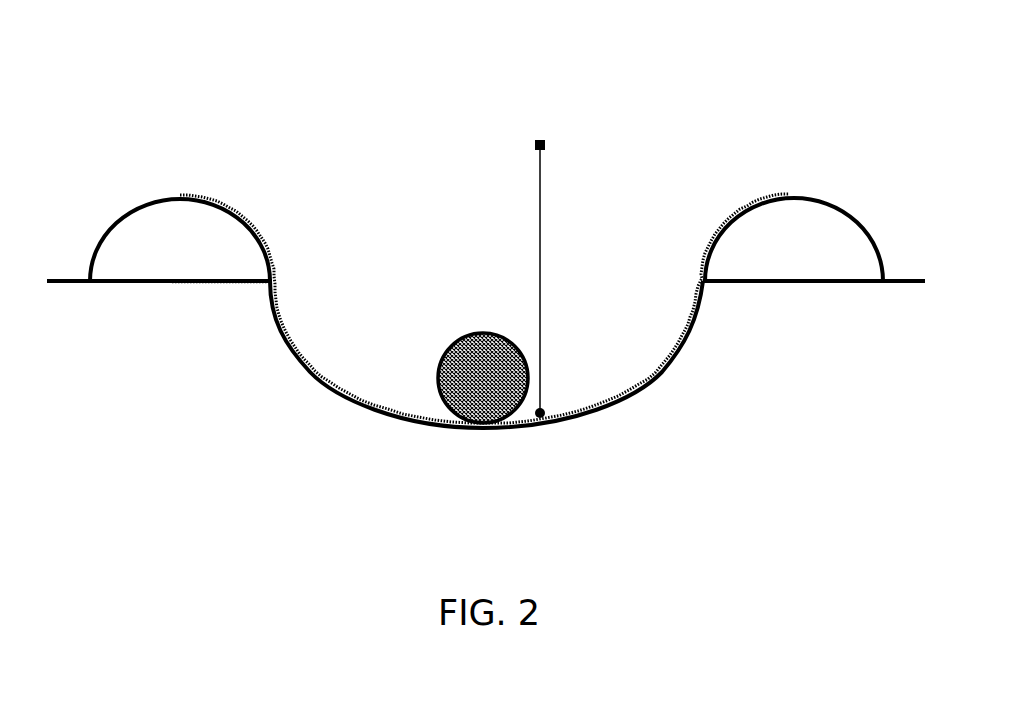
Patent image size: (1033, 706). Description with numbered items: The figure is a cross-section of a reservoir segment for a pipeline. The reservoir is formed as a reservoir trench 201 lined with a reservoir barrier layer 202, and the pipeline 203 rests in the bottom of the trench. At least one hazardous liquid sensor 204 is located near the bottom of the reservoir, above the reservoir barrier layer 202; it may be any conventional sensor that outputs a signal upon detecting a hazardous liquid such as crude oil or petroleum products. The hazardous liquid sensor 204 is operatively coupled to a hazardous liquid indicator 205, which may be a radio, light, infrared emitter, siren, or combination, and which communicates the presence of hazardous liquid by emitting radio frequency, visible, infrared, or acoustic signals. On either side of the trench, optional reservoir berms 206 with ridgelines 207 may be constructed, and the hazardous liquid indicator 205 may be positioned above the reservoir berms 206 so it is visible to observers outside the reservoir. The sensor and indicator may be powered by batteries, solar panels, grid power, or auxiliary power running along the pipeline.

The reservoir trench 201 is at (320, 333).
The reservoir barrier layer 202 is at (352, 398).
The pipeline 203 is at (472, 402).
The hazardous liquid sensor 204 is at (540, 413).
The hazardous liquid indicator 205 is at (541, 144).
The reservoir berm 206 is at (177, 247).
The ridgeline 207 is at (170, 200).